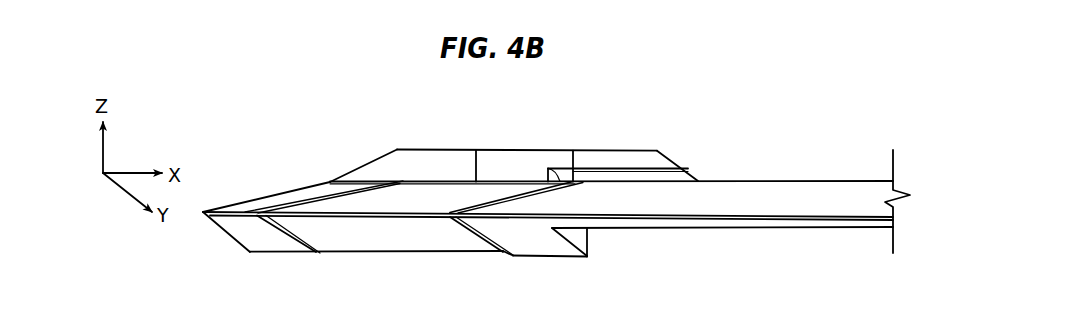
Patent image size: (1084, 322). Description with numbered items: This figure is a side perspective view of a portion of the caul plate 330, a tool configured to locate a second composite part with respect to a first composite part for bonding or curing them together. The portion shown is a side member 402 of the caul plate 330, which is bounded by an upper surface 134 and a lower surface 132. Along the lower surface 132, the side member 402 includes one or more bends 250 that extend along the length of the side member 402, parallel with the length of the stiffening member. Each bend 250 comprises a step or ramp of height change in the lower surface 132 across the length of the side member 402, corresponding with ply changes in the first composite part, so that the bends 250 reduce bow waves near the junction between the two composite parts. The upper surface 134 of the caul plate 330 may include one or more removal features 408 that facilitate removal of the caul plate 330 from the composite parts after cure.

The caul plate 330 is at (320, 90).
The side member 402 is at (299, 185).
The removal feature 408 is at (595, 151).
The upper surface 134 is at (280, 197).
The lower surface 132 is at (236, 236).
The bend 250 is at (286, 236).